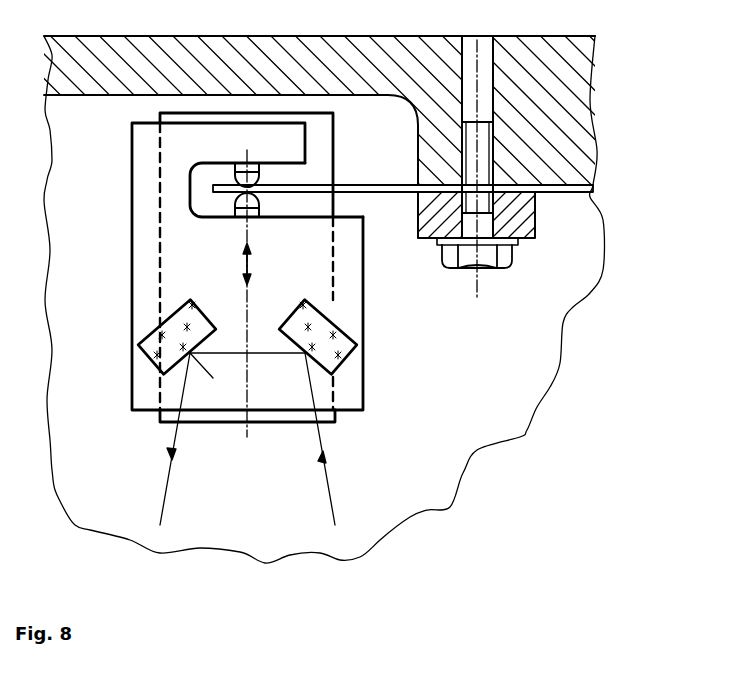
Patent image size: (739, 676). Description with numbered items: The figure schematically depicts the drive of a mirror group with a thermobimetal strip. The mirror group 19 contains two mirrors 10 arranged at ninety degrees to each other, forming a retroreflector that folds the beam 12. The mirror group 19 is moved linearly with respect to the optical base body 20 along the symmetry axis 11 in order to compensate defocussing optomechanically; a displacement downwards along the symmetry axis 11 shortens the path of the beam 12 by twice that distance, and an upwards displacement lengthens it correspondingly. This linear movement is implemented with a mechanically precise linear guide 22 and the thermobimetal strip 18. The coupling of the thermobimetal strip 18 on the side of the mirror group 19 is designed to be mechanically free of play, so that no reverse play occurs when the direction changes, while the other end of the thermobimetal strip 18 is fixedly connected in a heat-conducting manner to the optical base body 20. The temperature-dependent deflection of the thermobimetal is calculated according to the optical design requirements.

The mirrors 10 is at (155, 332).
The symmetry axis 11 is at (250, 308).
The beam 12 is at (165, 483).
The thermobimetal strip 18 is at (300, 185).
The mirror group 19 is at (348, 393).
The optical base body 20 is at (605, 227).
The linear guide 22 is at (208, 423).